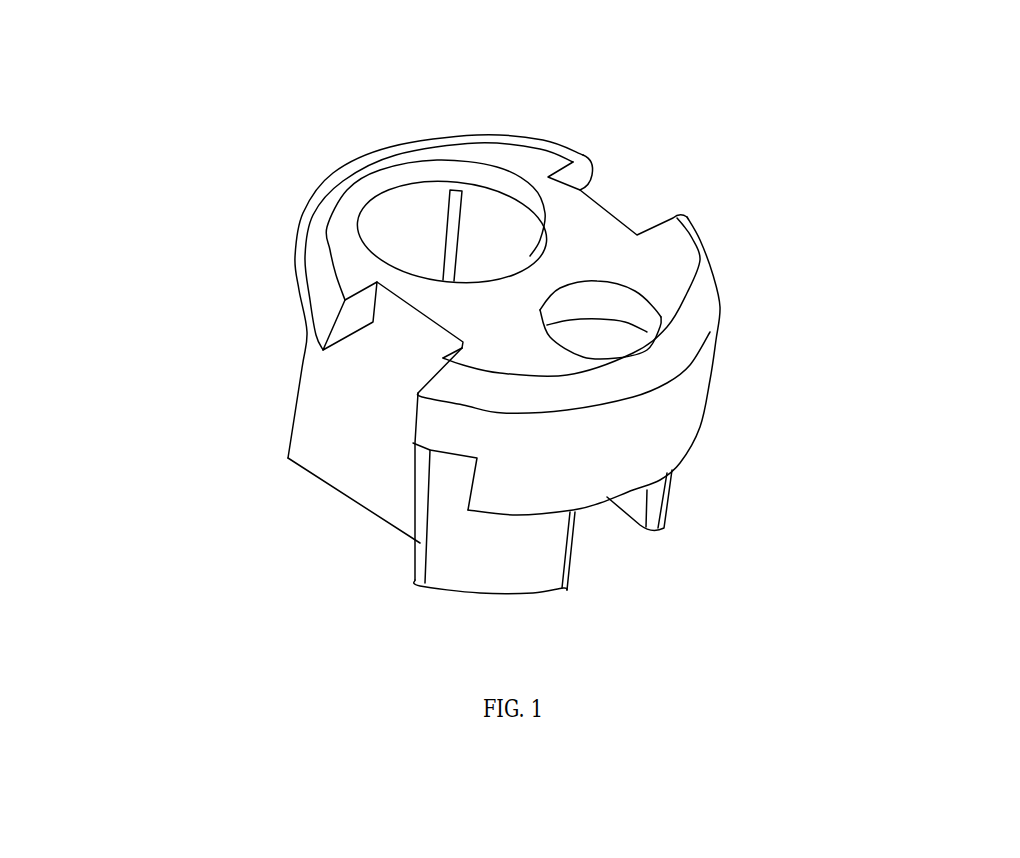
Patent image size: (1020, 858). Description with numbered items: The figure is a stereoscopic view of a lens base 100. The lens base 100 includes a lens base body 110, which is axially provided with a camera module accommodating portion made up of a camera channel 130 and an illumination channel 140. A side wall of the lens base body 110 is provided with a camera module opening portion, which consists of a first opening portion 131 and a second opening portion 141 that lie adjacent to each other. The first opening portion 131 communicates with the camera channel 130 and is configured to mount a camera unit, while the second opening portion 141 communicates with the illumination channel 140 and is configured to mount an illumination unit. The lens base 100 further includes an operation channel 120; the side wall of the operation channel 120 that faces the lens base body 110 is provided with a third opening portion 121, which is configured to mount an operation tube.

The lens base 100 is at (222, 78).
The lens base body 110 is at (703, 243).
The operation channel 120 is at (637, 360).
The third opening portion 121 is at (650, 547).
The camera channel 130 is at (437, 237).
The first opening portion 131 is at (395, 167).
The illumination channel 140 is at (367, 387).
The second opening portion 141 is at (663, 167).